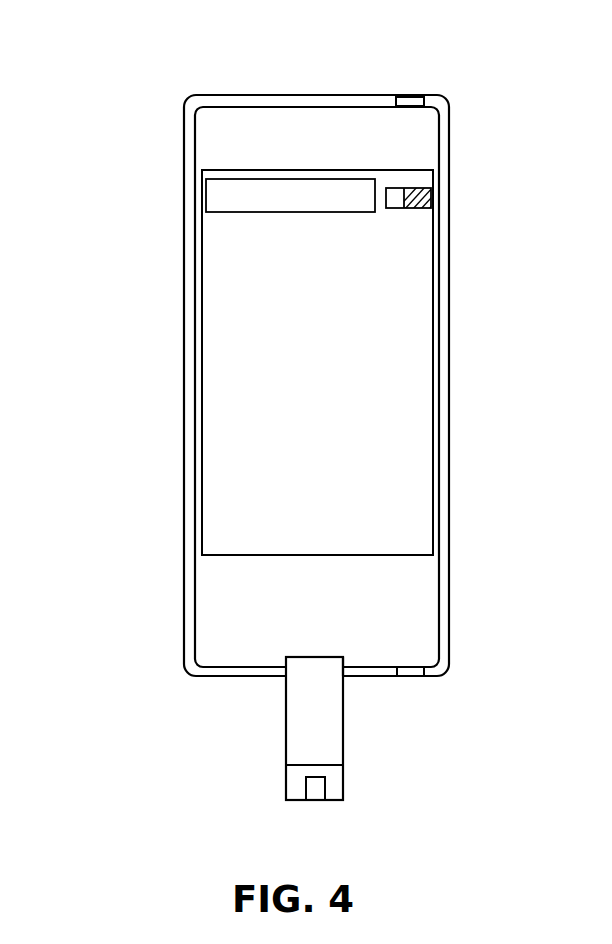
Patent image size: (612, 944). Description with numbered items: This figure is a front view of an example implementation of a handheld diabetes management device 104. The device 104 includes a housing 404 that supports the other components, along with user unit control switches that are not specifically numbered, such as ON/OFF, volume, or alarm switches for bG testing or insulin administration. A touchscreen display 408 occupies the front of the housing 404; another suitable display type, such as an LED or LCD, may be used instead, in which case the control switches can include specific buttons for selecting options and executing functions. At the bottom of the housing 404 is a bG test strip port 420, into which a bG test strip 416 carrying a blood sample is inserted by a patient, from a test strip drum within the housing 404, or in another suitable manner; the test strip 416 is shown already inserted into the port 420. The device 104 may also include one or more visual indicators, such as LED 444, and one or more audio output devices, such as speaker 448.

The diabetes management device 104 is at (307, 407).
The housing 404 is at (449, 97).
The touchscreen display 408 is at (467, 185).
The bG test strip 416 is at (286, 710).
The bG test strip port 420 is at (345, 677).
The LED 444 is at (410, 95).
The speaker 448 is at (410, 677).